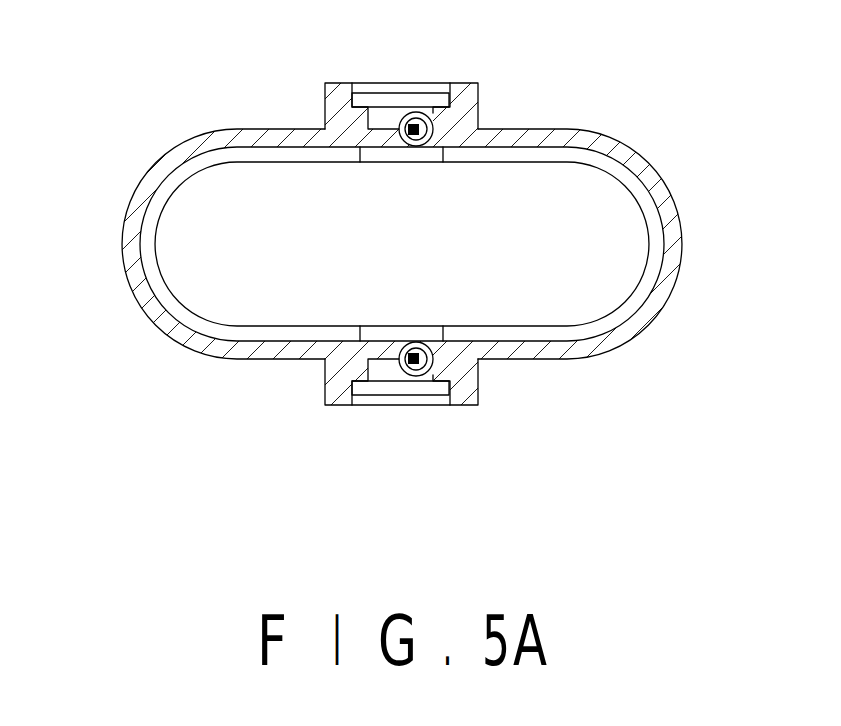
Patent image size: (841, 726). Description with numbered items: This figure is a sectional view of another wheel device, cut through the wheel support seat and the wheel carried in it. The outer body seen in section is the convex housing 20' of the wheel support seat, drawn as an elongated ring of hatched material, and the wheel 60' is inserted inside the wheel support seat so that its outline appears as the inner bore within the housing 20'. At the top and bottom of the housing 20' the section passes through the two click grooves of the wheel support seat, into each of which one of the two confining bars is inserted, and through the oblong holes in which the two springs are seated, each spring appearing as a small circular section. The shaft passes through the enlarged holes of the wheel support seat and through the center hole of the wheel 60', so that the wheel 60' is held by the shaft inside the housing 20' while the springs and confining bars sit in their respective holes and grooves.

The convex housing 20' is at (358, 244).
The wheel 60' is at (472, 244).